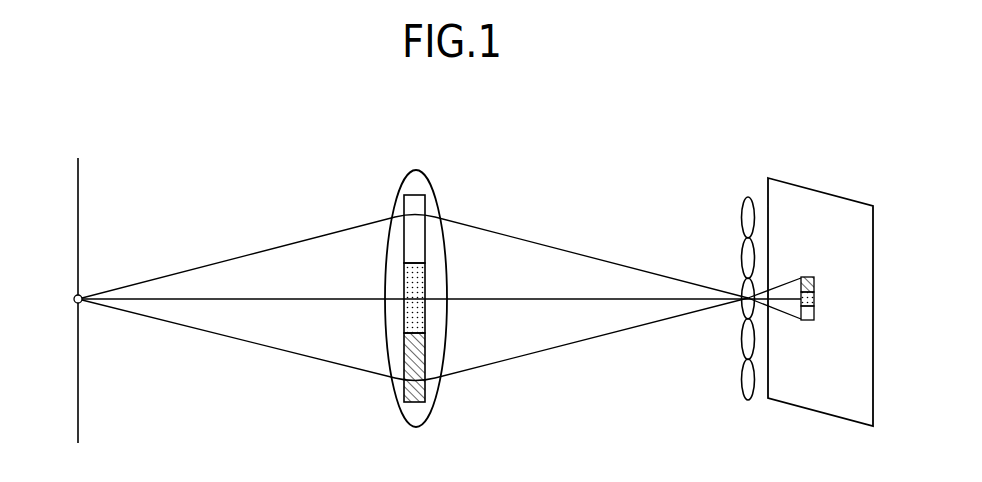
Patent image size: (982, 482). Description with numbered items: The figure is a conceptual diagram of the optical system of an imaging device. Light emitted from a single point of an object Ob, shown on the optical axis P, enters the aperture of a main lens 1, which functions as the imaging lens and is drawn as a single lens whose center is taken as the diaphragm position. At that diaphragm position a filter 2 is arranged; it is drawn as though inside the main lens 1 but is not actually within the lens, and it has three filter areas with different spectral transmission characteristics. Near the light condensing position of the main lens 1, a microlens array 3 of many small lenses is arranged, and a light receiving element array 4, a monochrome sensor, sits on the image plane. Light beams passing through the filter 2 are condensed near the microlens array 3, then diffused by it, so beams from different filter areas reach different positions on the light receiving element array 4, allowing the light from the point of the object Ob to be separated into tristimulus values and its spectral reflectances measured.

The main lens 1 is at (416, 170).
The filter 2 is at (404, 245).
The microlens array 3 is at (748, 197).
The light receiving element array 4 is at (852, 199).
The optical axis P is at (73, 299).
The object Ob is at (79, 183).